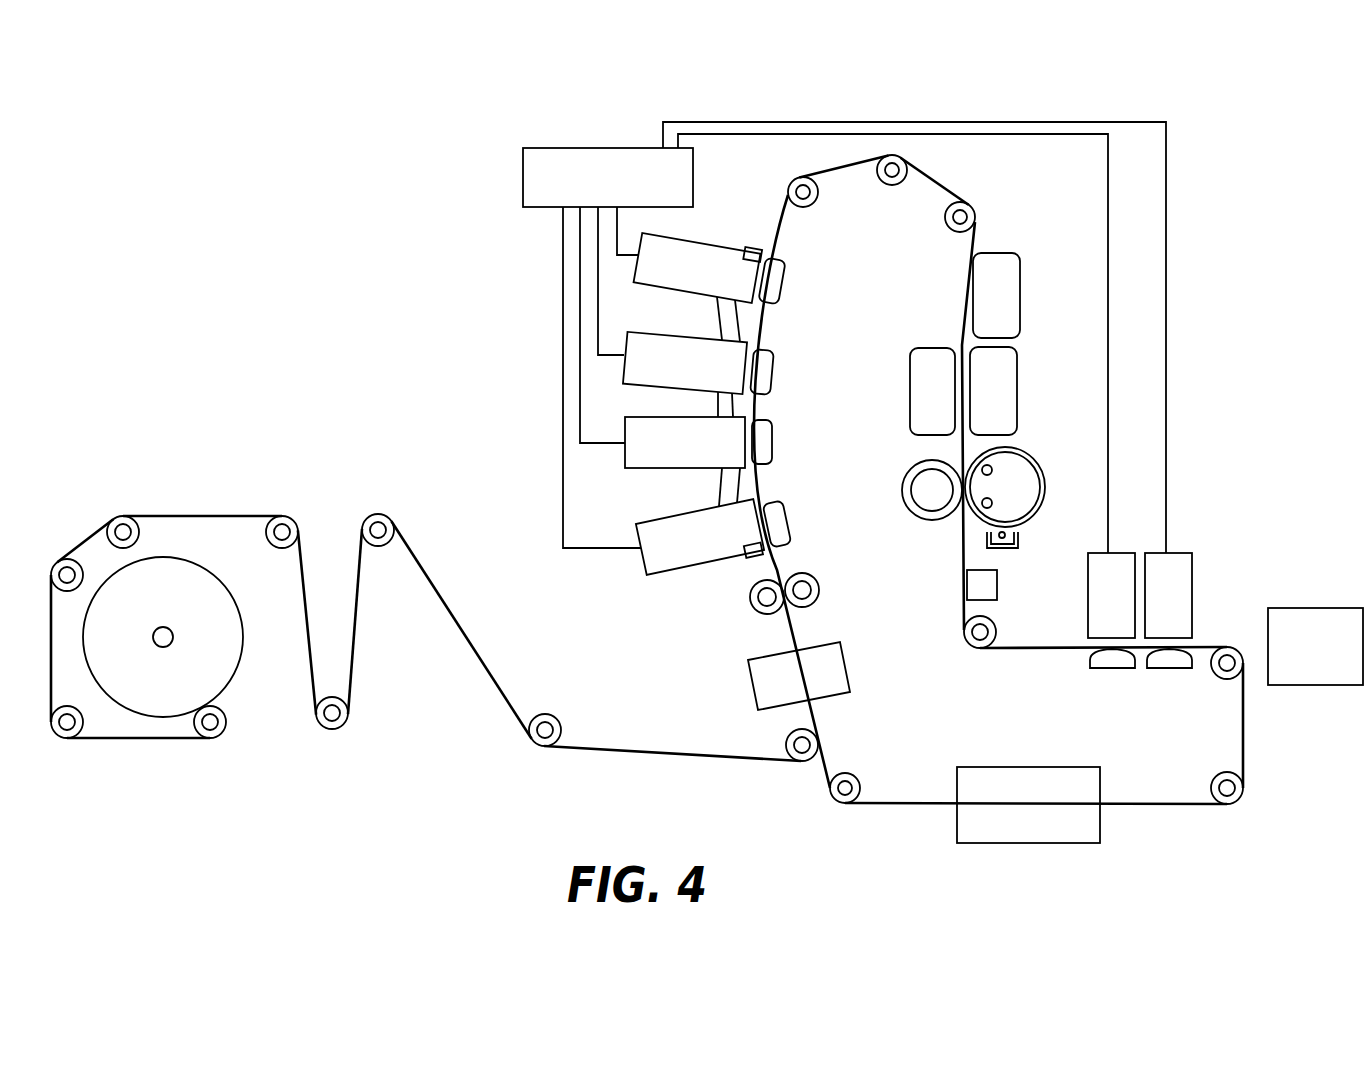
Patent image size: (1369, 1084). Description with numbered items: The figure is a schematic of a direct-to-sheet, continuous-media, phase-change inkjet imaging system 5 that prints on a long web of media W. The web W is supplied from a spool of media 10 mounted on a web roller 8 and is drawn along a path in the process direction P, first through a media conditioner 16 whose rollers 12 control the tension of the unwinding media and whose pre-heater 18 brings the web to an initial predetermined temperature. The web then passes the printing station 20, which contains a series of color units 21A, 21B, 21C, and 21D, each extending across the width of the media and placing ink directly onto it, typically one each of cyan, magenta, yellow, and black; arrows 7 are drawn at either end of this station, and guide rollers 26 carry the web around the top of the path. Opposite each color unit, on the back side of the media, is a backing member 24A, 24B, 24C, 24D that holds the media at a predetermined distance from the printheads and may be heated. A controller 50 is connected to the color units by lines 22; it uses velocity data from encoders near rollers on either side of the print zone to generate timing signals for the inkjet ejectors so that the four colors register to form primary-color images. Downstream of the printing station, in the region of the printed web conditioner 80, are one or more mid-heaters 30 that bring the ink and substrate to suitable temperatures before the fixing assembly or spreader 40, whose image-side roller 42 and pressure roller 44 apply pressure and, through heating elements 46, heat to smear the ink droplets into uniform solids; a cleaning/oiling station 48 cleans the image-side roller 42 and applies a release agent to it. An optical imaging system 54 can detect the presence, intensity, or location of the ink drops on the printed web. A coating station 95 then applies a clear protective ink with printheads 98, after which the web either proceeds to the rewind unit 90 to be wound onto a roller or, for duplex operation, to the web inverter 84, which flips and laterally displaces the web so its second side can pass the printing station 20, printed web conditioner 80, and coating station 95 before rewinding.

The inkjet imaging system 5 is at (396, 226).
The cross-process direction 7 is at (770, 225).
The web roller 8 is at (163, 647).
The spool of media 10 is at (237, 598).
The rollers 12 is at (382, 546).
The media conditioner 16 is at (548, 664).
The pre-heater 18 is at (847, 665).
The printing station 20 is at (550, 468).
The color unit 21A is at (700, 575).
The color unit 21B is at (675, 470).
The color unit 21C is at (668, 388).
The color unit 21D is at (687, 293).
The control signal lines 22 is at (617, 243).
The backing member 24A is at (788, 522).
The backing member 24B is at (773, 373).
The backing member 24C is at (773, 443).
The backing member 24D is at (787, 280).
The guide rollers 26 is at (817, 201).
The mid-heater 30 is at (1037, 290).
The spreader 40 is at (1040, 424).
The image-side roller 42 is at (1043, 505).
The pressure roller 44 is at (922, 498).
The heating elements 46 is at (990, 500).
The cleaning/oiling station 48 is at (1003, 552).
The controller 50 is at (608, 147).
The optical imaging system 54 is at (980, 583).
The printed web conditioner 80 is at (944, 614).
The web inverter 84 is at (1028, 767).
The rewind unit 90 is at (1315, 608).
The coating station 95 is at (1185, 528).
The printhead 98 is at (1088, 597).
The web of media W is at (195, 515).
The process direction P is at (632, 738).